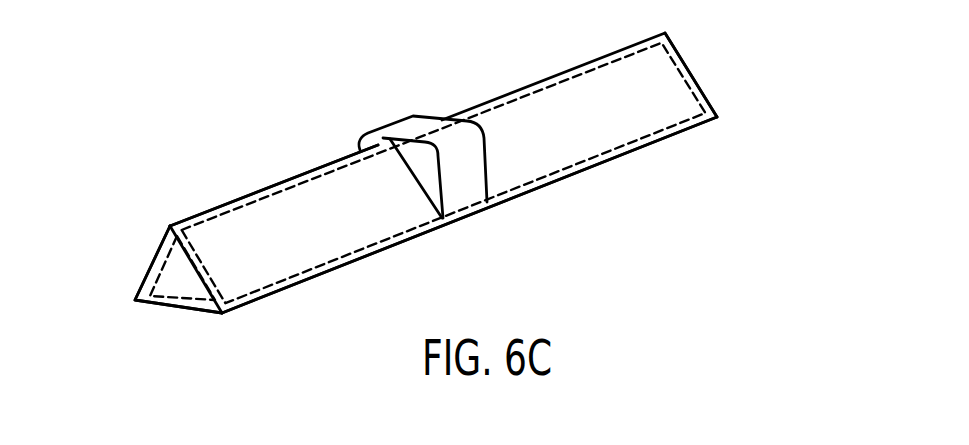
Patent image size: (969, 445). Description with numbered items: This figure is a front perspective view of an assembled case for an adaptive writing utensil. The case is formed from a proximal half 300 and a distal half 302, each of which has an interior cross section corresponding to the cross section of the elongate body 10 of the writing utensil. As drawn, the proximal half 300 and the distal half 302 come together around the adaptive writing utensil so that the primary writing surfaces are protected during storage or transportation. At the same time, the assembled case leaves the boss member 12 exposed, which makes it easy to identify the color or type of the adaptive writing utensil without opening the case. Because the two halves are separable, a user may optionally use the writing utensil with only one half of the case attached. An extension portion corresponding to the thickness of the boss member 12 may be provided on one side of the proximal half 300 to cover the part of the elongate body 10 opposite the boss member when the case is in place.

The proximal half 300 is at (583, 192).
The distal half 302 is at (354, 292).
The elongate body 10 is at (255, 205).
The boss member 12 is at (393, 125).